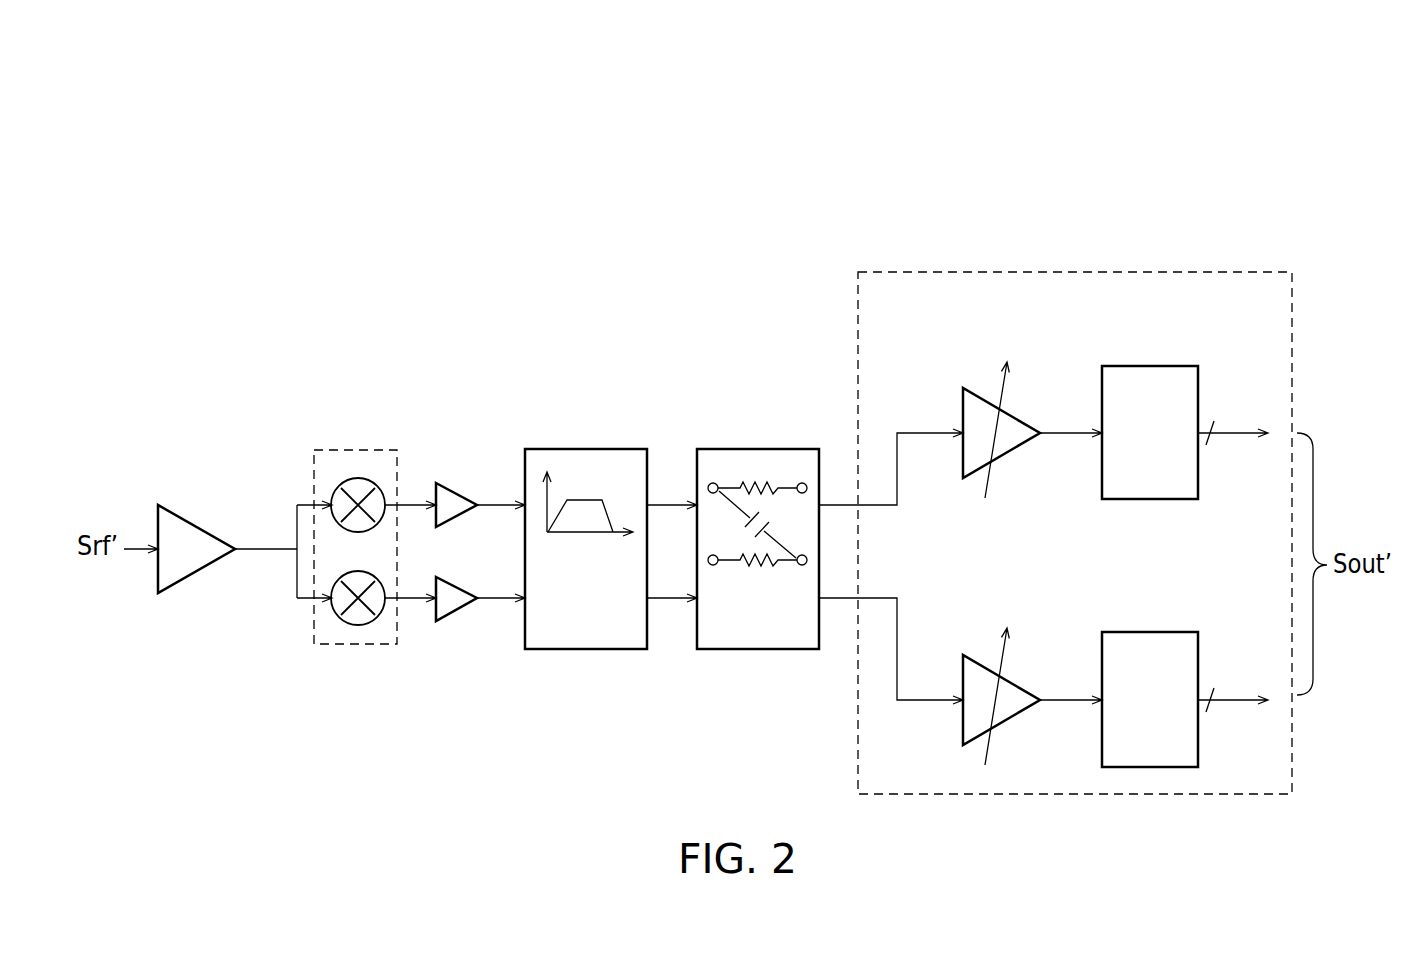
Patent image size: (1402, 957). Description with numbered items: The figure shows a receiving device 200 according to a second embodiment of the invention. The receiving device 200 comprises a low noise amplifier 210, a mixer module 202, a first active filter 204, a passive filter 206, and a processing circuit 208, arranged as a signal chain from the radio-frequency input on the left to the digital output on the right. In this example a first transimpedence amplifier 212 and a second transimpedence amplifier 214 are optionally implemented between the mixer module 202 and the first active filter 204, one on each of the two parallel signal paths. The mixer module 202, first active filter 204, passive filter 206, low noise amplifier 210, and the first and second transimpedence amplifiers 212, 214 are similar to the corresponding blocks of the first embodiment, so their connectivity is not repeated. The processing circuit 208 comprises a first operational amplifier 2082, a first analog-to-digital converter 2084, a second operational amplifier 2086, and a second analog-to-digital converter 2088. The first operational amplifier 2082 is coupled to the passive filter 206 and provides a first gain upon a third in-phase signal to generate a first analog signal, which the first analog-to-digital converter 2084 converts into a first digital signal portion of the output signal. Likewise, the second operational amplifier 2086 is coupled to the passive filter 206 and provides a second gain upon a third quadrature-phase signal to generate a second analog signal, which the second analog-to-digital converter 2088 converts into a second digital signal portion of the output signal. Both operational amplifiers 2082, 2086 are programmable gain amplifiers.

The receiving device 200 is at (1232, 150).
The mixer module 202 is at (353, 450).
The first active filter 204 is at (596, 449).
The passive filter 206 is at (758, 449).
The processing circuit 208 is at (1125, 272).
The low noise amplifier 210 is at (196, 521).
The first transimpedence amplifier 212 is at (457, 487).
The second transimpedence amplifier 214 is at (457, 615).
The first operational amplifier 2082 is at (978, 390).
The first analog-to-digital converter 2084 is at (1153, 366).
The second operational amplifier 2086 is at (978, 657).
The second analog-to-digital converter 2088 is at (1153, 632).